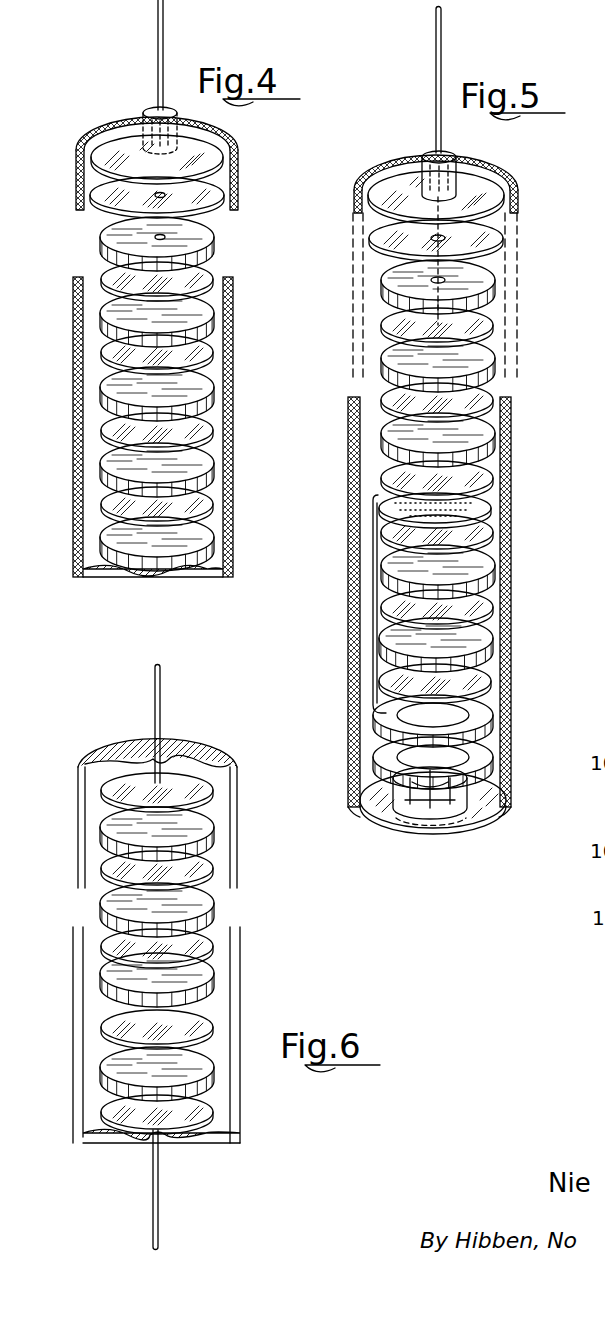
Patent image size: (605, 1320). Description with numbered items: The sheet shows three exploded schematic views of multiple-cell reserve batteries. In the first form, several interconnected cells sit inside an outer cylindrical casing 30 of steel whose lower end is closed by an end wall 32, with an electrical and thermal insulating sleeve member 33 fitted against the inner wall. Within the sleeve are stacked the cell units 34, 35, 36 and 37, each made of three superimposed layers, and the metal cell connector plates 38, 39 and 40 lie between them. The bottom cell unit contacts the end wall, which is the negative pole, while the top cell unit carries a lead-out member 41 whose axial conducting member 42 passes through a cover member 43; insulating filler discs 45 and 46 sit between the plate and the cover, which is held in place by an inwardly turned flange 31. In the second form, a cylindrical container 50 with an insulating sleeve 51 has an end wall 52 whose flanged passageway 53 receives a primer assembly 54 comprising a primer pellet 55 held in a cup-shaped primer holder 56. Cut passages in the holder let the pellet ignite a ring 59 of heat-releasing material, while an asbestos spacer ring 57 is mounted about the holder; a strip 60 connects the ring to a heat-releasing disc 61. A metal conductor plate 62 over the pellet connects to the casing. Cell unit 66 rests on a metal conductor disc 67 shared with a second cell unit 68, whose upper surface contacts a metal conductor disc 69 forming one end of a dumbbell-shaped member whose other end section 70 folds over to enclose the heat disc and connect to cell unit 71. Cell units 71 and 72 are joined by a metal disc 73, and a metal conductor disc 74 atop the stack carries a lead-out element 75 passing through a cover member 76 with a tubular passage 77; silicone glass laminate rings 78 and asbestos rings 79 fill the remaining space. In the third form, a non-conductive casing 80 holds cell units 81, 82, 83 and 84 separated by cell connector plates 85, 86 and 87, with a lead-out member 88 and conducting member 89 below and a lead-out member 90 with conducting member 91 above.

In FIG. 4, the outer cylindrical container or casing 30 is at (72, 428).
In FIG. 4, the inwardly turned flange 31 is at (90, 147).
In FIG. 4, the end wall 32 is at (112, 578).
In FIG. 4, the insulating sleeve member 33 is at (85, 507).
In FIG. 4, the cell unit 34 is at (210, 545).
In FIG. 4, the cell unit 35 is at (212, 472).
In FIG. 4, the cell unit 36 is at (212, 400).
In FIG. 4, the cell unit 37 is at (212, 317).
In FIG. 4, the cell connector plate 38 is at (182, 505).
In FIG. 4, the cell connector plate 39 is at (187, 430).
In FIG. 4, the cell connector plate 40 is at (182, 355).
In FIG. 4, the lead-out member 41 is at (195, 277).
In FIG. 4, the conducting member 42 is at (157, 20).
In FIG. 4, the cover member 43 is at (84, 178).
In FIG. 4, the insulating filler disc 45 is at (197, 195).
In FIG. 4, the insulating filler disc 46 is at (197, 238).
In FIG. 5, the cylindrical container 50 is at (347, 668).
In FIG. 5, the insulating sleeve 51 is at (353, 437).
In FIG. 5, the end wall 52 is at (360, 813).
In FIG. 5, the flanged passageway 53 is at (382, 810).
In FIG. 5, the primer assembly 54 is at (461, 805).
In FIG. 5, the primer pellet 55 is at (422, 833).
In FIG. 5, the primer holder 56 is at (462, 807).
In FIG. 5, the spacer ring 57 is at (490, 743).
In FIG. 5, the ring of heat-releasing material 59 is at (483, 715).
In FIG. 5, the strip of combustible material 60 is at (375, 618).
In FIG. 5, the disc of heat-releasing material 61 is at (402, 508).
In FIG. 5, the metal conductor plate 62 is at (470, 677).
In FIG. 5, the battery cell unit or pellet 66 is at (464, 650).
In FIG. 5, the metal conductor disc 67 is at (473, 603).
In FIG. 5, the second cell unit 68 is at (492, 573).
In FIG. 5, the metal conductor disc 69 is at (472, 528).
In FIG. 5, the disc-shaped end section 70 is at (467, 482).
In FIG. 5, the cell unit 71 is at (492, 443).
In FIG. 5, the cell unit 72 is at (492, 378).
In FIG. 5, the metal disc 73 is at (463, 397).
In FIG. 5, the metal conductor disc 74 is at (472, 327).
In FIG. 5, the lead-out element 75 is at (435, 70).
In FIG. 5, the cover member 76 is at (505, 180).
In FIG. 5, the tubular passage 77 is at (427, 155).
In FIG. 5, the silicone glass laminate ring 78 is at (478, 283).
In FIG. 5, the asbestos ring 79 is at (477, 240).
In FIG. 6, the outer cylindrical container or casing 80 is at (241, 1012).
In FIG. 6, the cell unit 81 is at (215, 1083).
In FIG. 6, the cell unit 82 is at (218, 980).
In FIG. 6, the cell unit 83 is at (215, 907).
In FIG. 6, the cell unit 84 is at (212, 837).
In FIG. 6, the cell connector plate 85 is at (127, 1030).
In FIG. 6, the cell connector plate 86 is at (117, 943).
In FIG. 6, the cell connector plate 87 is at (100, 867).
In FIG. 6, the lead-out member 88 is at (130, 1113).
In FIG. 6, the conducting member 89 is at (159, 1198).
In FIG. 6, the lead-out member 90 is at (195, 792).
In FIG. 6, the conducting member 91 is at (154, 693).